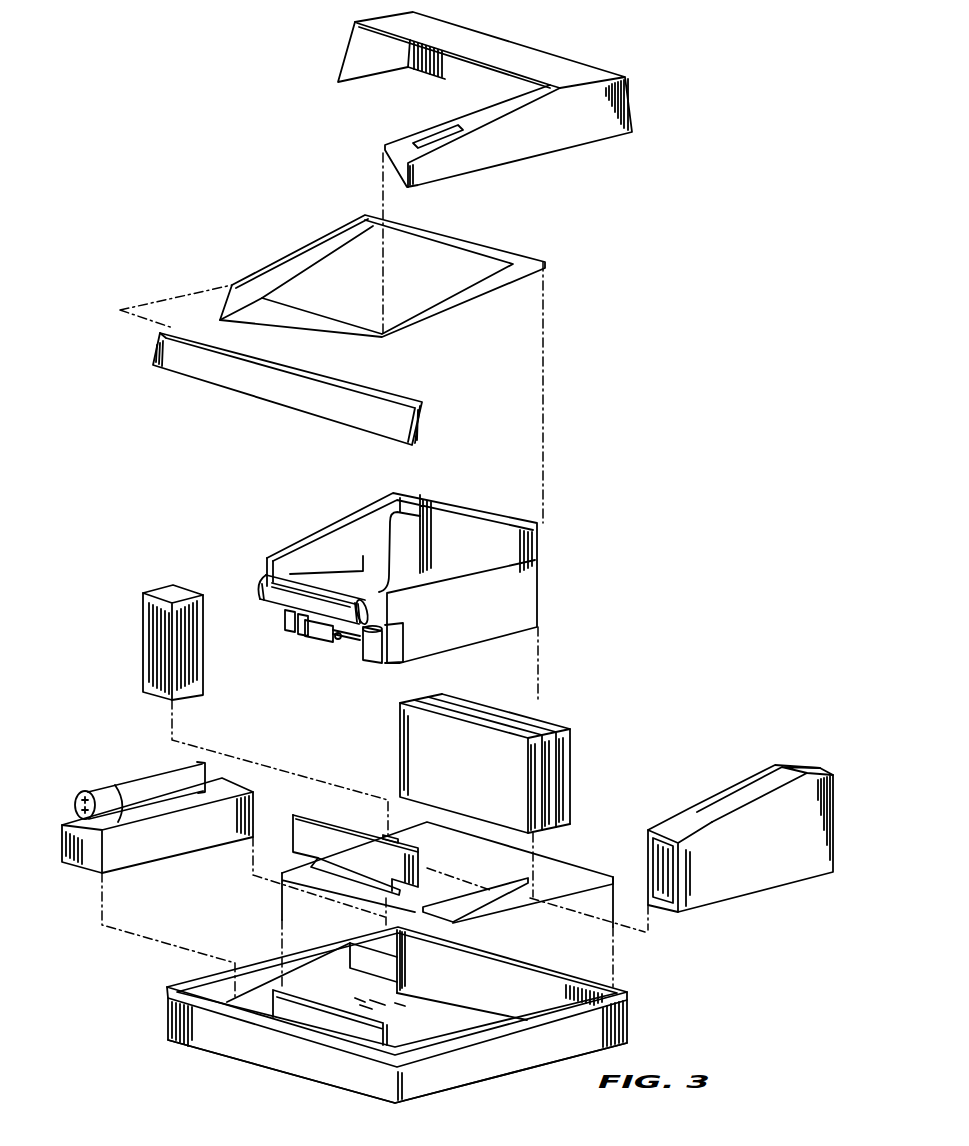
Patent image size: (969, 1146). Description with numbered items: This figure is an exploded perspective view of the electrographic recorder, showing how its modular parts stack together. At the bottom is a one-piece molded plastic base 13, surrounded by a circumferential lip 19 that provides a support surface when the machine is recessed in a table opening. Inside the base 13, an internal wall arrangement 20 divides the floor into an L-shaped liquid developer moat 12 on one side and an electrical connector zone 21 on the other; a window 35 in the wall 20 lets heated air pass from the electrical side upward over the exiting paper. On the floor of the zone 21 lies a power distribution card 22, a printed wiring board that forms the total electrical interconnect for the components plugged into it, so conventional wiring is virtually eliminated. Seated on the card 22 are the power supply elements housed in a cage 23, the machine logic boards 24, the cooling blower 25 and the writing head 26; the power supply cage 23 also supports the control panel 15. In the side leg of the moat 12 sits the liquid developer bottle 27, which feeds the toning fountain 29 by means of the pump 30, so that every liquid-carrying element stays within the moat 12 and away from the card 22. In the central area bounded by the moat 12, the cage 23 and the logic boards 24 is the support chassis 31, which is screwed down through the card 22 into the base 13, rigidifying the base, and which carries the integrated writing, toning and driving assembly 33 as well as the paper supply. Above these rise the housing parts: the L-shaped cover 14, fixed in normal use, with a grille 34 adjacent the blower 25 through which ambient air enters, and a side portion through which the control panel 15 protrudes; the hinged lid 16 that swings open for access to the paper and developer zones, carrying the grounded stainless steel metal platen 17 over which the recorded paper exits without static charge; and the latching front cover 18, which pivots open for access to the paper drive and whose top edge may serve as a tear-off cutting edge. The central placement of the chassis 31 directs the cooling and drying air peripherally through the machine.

The liquid developer moat 12 is at (258, 972).
The base 13 is at (622, 1037).
The L-shaped cover 14 is at (582, 72).
The control panel 15 is at (670, 823).
The hinged lid 16 is at (310, 248).
The metal platen 17 is at (433, 292).
The latching front cover 18 is at (237, 382).
The circumferential lip 19 is at (628, 996).
The internal wall arrangement 20 is at (273, 990).
The electrical connector zone 21 is at (482, 995).
The power distribution card 22 is at (578, 875).
The power supply cage 23 is at (742, 882).
The machine logic boards 24 is at (490, 706).
The cooling blower 25 is at (195, 650).
The writing head 26 is at (342, 835).
The liquid developer bottle 27 is at (162, 792).
The toning fountain 29 is at (307, 570).
The pump 30 is at (327, 643).
The support chassis 31 is at (507, 593).
The integrated writing, toning and driving assembly 33 is at (258, 574).
The grille 34 is at (424, 72).
The window 35 is at (387, 1038).